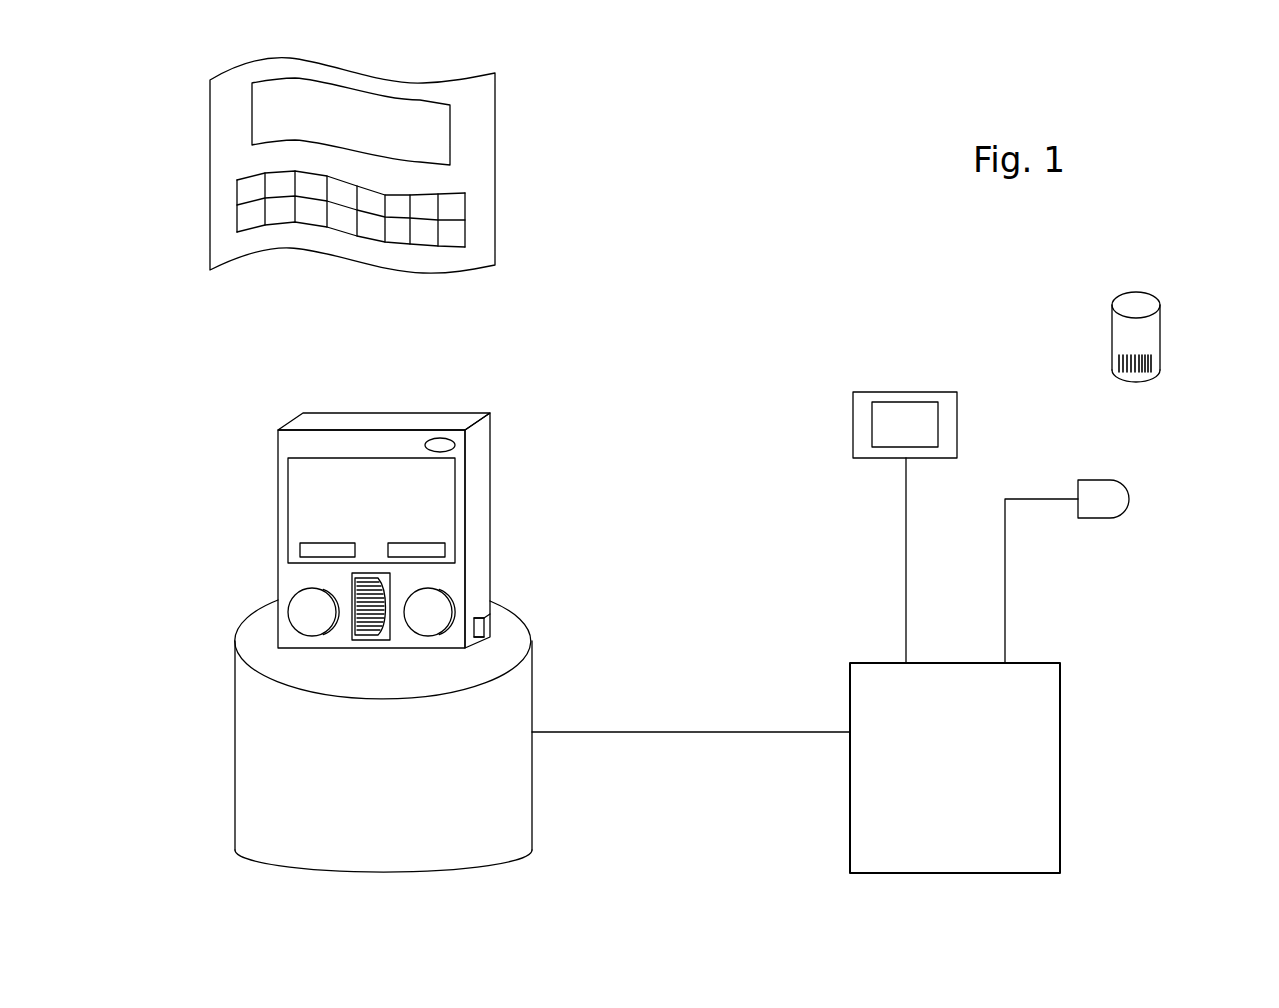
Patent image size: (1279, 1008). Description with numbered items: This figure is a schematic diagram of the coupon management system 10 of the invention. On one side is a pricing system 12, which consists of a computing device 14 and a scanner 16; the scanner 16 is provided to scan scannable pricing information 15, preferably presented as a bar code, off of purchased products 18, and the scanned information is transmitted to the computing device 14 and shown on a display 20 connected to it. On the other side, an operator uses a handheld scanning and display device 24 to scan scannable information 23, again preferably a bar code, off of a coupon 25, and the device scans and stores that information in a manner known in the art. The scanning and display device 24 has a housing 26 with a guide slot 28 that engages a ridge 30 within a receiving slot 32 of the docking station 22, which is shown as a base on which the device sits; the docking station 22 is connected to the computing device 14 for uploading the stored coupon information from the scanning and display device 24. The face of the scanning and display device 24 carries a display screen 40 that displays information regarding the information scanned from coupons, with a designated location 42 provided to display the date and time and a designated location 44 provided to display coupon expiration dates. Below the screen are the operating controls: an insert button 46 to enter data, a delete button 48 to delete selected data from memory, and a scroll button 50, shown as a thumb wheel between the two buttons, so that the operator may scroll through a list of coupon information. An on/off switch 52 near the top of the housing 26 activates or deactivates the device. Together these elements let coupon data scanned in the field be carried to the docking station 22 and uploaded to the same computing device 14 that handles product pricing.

The coupon management system 10 is at (673, 165).
The pricing system 12 is at (912, 350).
The computing device 14 is at (970, 778).
The scannable pricing information 15 is at (1147, 367).
The scanner 16 is at (1102, 507).
The purchased products 18 is at (1160, 330).
The display 20 is at (950, 413).
The docking station 22 is at (408, 778).
The scannable information 23 is at (453, 237).
The scanning and display device 24 is at (298, 442).
The coupon 25 is at (483, 155).
The housing 26 is at (478, 455).
The guide slot 28 is at (490, 628).
The ridge 30 is at (483, 638).
The receiving slot 32 is at (487, 622).
The display screen 40 is at (387, 508).
The designated location 42 is at (327, 543).
The designated location 44 is at (422, 543).
The insert button 46 is at (307, 615).
The delete button 48 is at (425, 622).
The scroll button 50 is at (365, 612).
The on/off switch 52 is at (427, 438).